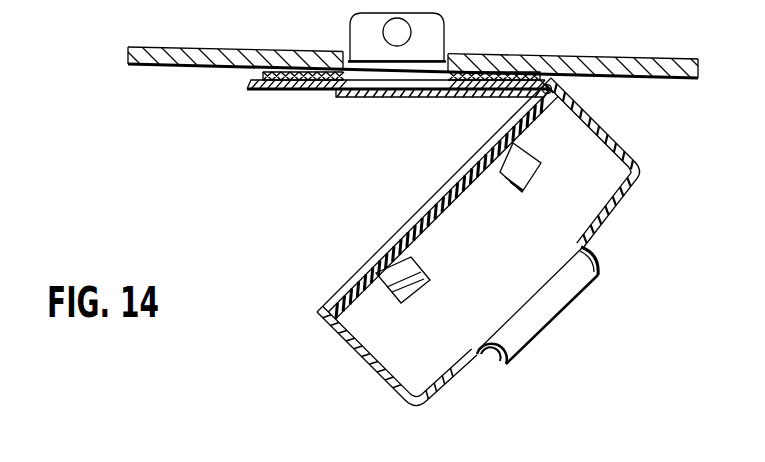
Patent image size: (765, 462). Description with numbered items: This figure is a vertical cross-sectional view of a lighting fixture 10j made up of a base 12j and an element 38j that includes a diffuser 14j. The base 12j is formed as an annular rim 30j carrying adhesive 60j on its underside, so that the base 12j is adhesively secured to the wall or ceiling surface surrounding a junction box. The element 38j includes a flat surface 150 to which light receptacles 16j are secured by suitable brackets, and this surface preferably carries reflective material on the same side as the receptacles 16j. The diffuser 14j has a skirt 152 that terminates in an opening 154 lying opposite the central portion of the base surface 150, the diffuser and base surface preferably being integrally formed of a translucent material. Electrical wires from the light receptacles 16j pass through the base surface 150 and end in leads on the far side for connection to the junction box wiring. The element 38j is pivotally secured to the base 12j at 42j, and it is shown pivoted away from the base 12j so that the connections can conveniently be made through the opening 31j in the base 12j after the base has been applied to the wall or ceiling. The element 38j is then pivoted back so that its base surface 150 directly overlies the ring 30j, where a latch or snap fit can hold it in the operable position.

The lighting fixture 10j is at (264, 194).
The base 12j is at (252, 92).
The diffuser 14j is at (349, 344).
The light receptacles 16j is at (531, 190).
The annular rim 30j is at (302, 92).
The opening 31j is at (338, 98).
The element 38j is at (460, 195).
The pivot 42j is at (545, 84).
The adhesive 60j is at (274, 69).
The flat surface 150 is at (433, 224).
The skirt 152 is at (621, 152).
The opening 154 is at (586, 260).